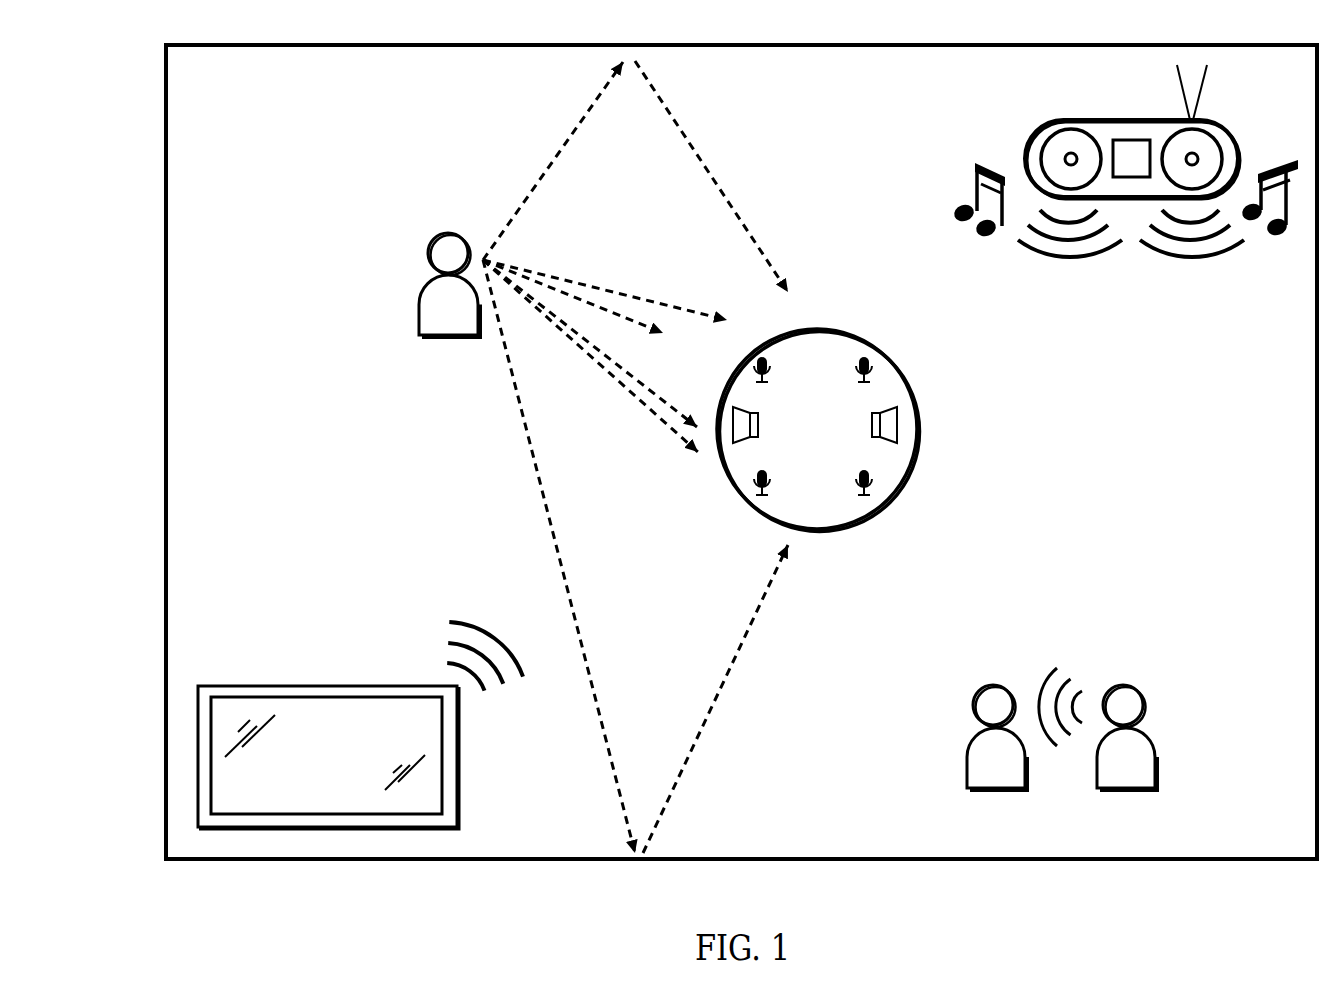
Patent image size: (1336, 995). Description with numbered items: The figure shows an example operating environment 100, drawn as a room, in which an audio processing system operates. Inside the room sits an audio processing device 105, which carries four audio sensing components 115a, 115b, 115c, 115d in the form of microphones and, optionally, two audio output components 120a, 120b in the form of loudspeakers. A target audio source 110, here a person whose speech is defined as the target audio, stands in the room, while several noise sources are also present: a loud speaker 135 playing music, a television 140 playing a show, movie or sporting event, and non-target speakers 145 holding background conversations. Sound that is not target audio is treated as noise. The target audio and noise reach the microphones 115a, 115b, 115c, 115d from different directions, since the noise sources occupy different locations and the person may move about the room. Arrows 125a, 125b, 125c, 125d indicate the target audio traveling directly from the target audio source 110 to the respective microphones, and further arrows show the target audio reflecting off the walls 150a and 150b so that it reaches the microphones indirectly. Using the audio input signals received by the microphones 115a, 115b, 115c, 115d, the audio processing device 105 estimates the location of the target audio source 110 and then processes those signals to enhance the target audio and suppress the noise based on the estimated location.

The operating environment 100 is at (109, 96).
The audio processing device 105 is at (822, 325).
The target audio source 110 is at (428, 252).
The audio sensing component 115a is at (770, 372).
The audio sensing component 115b is at (866, 355).
The audio sensing component 115c is at (797, 453).
The audio sensing component 115d is at (865, 497).
The audio output component 120a is at (735, 444).
The audio output component 120b is at (899, 422).
The arrow 125a is at (590, 283).
The arrow 125b is at (620, 310).
The arrow 125c is at (667, 400).
The arrow 125d is at (625, 393).
The loud speaker 135 is at (1058, 121).
The television 140 is at (328, 686).
The non-target speakers 145 is at (1146, 730).
The wall 150a is at (878, 47).
The wall 150b is at (839, 857).